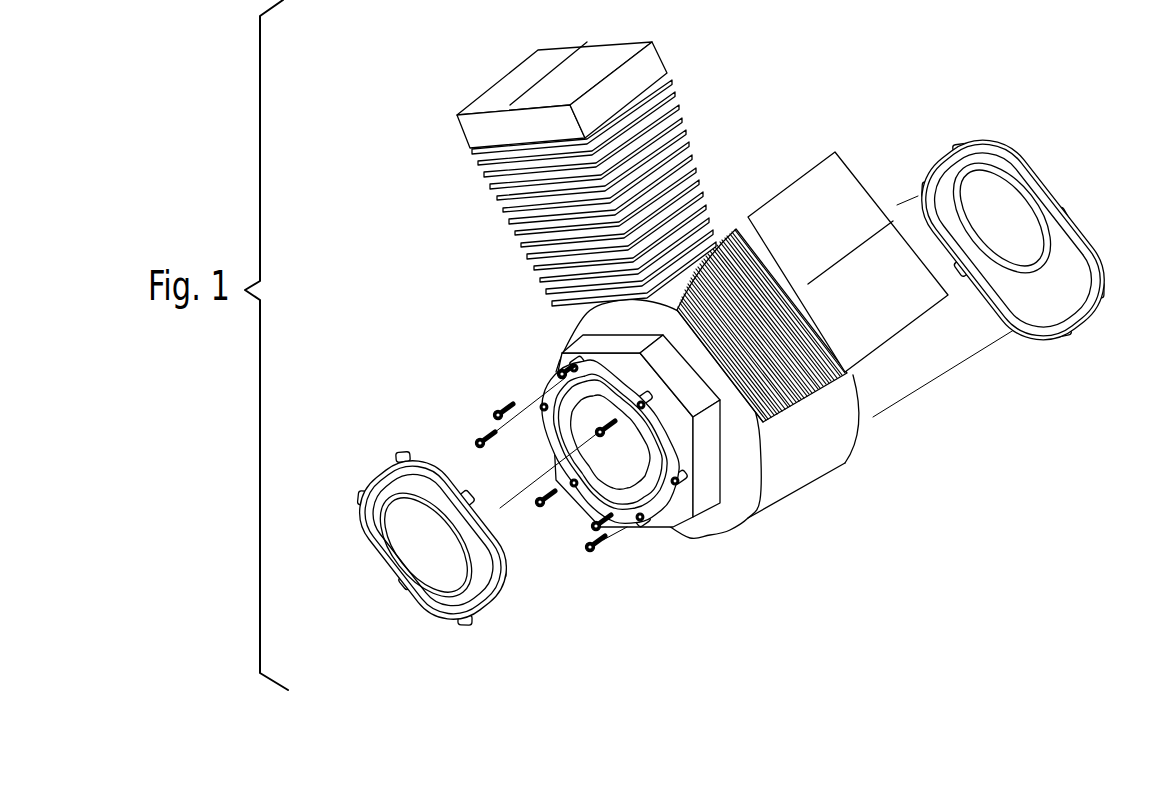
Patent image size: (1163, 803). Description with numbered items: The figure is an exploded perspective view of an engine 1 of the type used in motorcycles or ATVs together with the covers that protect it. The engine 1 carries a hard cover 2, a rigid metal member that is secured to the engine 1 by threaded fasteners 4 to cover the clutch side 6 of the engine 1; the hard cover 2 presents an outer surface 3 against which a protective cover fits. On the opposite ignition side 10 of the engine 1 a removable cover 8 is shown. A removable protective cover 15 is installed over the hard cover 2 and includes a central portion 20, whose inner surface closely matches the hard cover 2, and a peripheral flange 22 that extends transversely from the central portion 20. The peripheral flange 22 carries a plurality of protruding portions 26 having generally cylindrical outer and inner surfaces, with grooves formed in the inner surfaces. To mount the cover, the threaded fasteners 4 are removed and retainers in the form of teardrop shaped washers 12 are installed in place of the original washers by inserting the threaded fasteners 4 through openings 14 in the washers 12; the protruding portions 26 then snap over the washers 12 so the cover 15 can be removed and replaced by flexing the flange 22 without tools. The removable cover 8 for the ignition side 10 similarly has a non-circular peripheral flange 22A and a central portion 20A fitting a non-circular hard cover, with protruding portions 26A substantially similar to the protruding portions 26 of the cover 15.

The engine 1 is at (790, 500).
The hard cover 2 is at (566, 443).
The outer surface of hard cover 3 is at (608, 482).
The threaded fasteners 4 is at (494, 415).
The clutch side 6 is at (562, 353).
The removable cover 8 is at (1007, 236).
The ignition side 10 is at (717, 240).
The teardrop shaped washers 12 is at (573, 370).
The openings 14 is at (560, 376).
The removable protective cover 15 is at (424, 539).
The central portion 20 is at (398, 547).
The central portion 20A is at (1090, 238).
The peripheral flange 22 is at (496, 597).
The peripheral flange 22A is at (1093, 320).
The protruding portions 26 is at (400, 455).
The protruding portions 26A is at (962, 147).